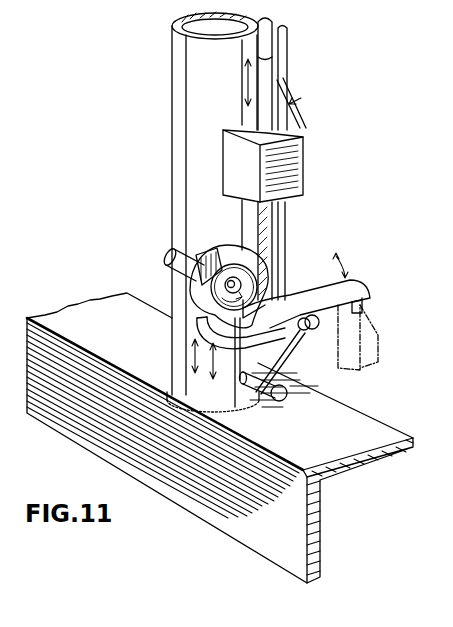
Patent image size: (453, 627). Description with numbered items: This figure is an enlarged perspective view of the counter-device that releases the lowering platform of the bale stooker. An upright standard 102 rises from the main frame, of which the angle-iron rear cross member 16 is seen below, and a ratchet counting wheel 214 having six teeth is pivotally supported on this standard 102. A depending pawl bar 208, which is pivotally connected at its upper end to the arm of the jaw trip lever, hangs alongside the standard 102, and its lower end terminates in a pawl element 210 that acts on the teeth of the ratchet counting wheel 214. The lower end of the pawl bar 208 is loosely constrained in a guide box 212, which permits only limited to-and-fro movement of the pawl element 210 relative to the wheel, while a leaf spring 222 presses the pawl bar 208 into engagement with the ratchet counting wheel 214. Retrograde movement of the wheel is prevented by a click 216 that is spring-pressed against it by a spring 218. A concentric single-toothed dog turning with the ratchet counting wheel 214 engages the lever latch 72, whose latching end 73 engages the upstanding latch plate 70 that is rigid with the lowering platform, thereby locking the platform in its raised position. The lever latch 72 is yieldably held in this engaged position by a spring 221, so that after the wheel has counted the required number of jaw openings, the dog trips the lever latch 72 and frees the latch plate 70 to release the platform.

The rear cross member 16 is at (357, 440).
The standard 102 is at (192, 80).
The pawl bar 208 is at (273, 38).
The leaf spring 222 is at (290, 118).
The guide box 212 is at (303, 167).
The ratchet counting wheel 214 is at (237, 248).
The pawl element 210 is at (273, 281).
The lever latch 72 is at (357, 290).
The latching end 73 is at (370, 300).
The latch plate 70 is at (380, 340).
The spring 218 is at (290, 333).
The click 216 is at (213, 399).
The spring 221 is at (247, 410).